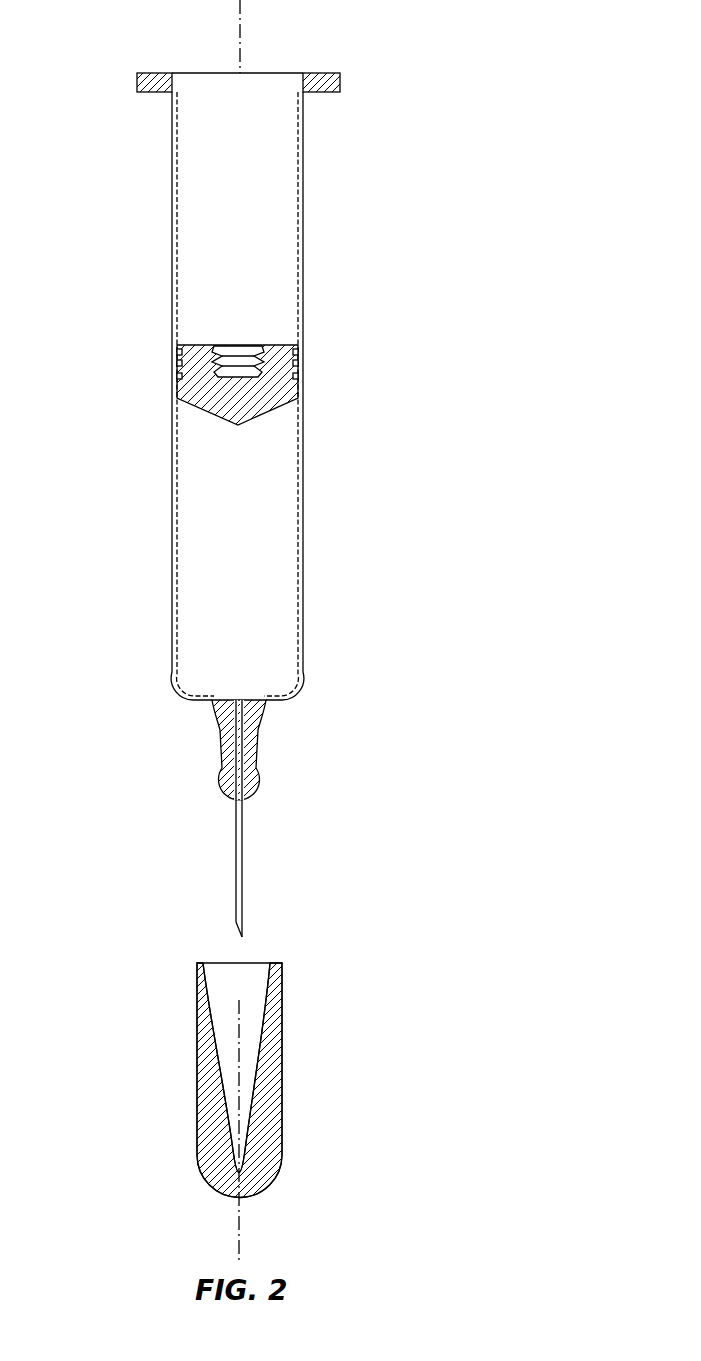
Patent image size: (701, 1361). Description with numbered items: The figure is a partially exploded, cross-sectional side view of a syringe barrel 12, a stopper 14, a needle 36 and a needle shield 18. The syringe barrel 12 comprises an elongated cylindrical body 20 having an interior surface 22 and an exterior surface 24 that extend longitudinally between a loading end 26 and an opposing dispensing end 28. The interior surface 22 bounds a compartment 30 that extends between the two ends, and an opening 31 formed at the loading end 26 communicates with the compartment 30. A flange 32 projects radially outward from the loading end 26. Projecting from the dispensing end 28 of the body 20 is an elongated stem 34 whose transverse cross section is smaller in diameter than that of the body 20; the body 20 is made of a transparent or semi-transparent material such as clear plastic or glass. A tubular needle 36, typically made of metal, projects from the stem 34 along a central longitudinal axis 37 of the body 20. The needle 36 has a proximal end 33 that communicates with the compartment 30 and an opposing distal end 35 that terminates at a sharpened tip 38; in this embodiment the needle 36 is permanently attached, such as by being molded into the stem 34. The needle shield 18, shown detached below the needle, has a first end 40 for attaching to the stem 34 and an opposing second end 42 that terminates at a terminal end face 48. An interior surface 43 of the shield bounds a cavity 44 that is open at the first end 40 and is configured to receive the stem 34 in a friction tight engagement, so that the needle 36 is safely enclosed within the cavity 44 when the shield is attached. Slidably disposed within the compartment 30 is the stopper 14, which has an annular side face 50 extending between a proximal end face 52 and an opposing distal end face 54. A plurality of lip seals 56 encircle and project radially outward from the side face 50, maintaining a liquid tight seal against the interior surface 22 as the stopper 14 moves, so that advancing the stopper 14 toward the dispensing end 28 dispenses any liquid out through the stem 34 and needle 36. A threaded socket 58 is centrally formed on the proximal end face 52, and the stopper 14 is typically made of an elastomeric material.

The syringe barrel 12 is at (234, 385).
The stopper 14 is at (227, 359).
The needle shield 18 is at (197, 1077).
The elongated cylindrical body 20 is at (304, 443).
The interior surface 22 is at (301, 213).
The exterior surface 24 is at (304, 155).
The loading end 26 is at (141, 105).
The dispensing end 28 is at (159, 711).
The compartment 30 is at (262, 256).
The opening 31 is at (262, 73).
The flange 32 is at (340, 83).
The proximal end 33 is at (287, 750).
The elongated stem 34 is at (262, 745).
The distal end 35 is at (247, 873).
The tubular needle 36 is at (236, 845).
The central longitudinal axis 37 is at (238, 1222).
The sharpened tip 38 is at (236, 922).
The first end 40 is at (265, 1083).
The second end 42 is at (302, 1190).
The interior surface 43 is at (218, 1000).
The cavity 44 is at (238, 1020).
The terminal end face 48 is at (239, 1191).
The annular side face 50 is at (177, 392).
The proximal end face 52 is at (281, 346).
The distal end face 54 is at (272, 424).
The lip seals 56 is at (177, 358).
The threaded socket 58 is at (240, 345).